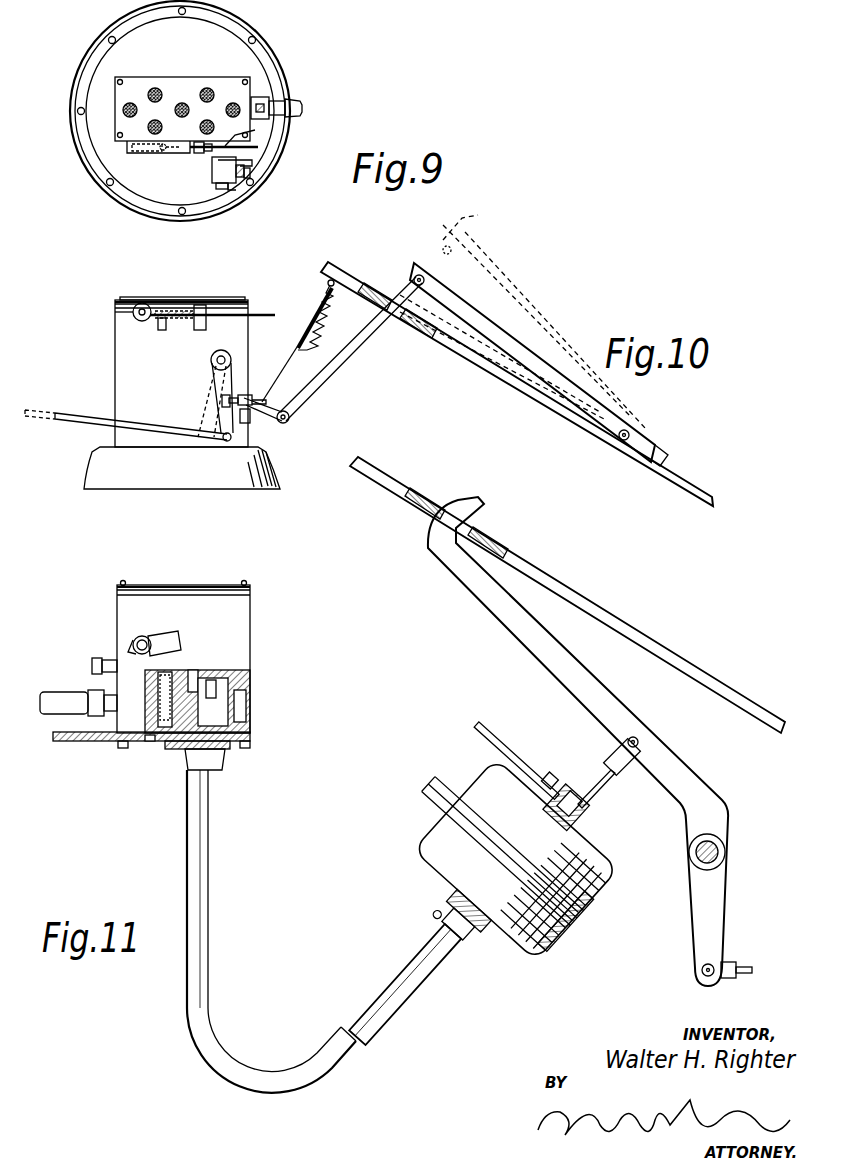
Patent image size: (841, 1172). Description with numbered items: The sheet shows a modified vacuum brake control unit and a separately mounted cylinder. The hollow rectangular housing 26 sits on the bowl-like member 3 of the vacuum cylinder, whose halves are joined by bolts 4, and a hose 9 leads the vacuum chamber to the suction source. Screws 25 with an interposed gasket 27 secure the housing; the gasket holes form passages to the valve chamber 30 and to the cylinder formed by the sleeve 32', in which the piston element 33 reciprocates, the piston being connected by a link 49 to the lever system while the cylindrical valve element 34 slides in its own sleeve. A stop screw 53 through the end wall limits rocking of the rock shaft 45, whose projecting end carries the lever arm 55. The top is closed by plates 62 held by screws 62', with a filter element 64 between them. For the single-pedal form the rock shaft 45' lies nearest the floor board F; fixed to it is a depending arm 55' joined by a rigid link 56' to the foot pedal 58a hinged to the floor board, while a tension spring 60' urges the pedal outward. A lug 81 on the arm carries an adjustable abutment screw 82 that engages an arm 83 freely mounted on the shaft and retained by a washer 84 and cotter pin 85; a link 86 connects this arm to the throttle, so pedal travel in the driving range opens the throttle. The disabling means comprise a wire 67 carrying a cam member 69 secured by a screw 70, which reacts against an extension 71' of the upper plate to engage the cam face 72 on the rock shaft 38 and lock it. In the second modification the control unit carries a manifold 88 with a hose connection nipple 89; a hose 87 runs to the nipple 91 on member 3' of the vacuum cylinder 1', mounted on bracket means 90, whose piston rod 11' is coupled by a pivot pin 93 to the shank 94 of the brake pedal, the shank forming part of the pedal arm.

In FIG. 9, the bowl-like member 3 is at (182, 111).
In FIG. 10, the bowl-like member 3 is at (166, 468).
In FIG. 9, the bolts 4 is at (110, 40).
In FIG. 9, the hose 9 is at (292, 101).
In FIG. 10, the hose 9 is at (244, 424).
In FIG. 11, the hose 9 is at (62, 702).
In FIG. 9, the housing 26 is at (180, 79).
In FIG. 10, the housing 26 is at (115, 374).
In FIG. 11, the housing 26 is at (118, 607).
In FIG. 9, the adjustable stop screw 53 is at (284, 100).
In FIG. 11, the adjustable stop screw 53 is at (90, 666).
In FIG. 9, the plates 62 is at (181, 93).
In FIG. 10, the plates 62 is at (108, 285).
In FIG. 11, the plates 62 is at (154, 577).
In FIG. 9, the screws 62' is at (121, 65).
In FIG. 10, the screws 62' is at (131, 285).
In FIG. 11, the screws 62' is at (121, 572).
In FIG. 9, the extension 71' is at (155, 165).
In FIG. 10, the extension 71' is at (174, 293).
In FIG. 9, the rock shaft 45' is at (216, 138).
In FIG. 10, the rock shaft 45' is at (199, 394).
In FIG. 9, the wire 67 is at (260, 145).
In FIG. 10, the wire 67 is at (266, 313).
In FIG. 9, the arm 55' is at (268, 156).
In FIG. 10, the arm 55' is at (274, 373).
In FIG. 9, the washer 84 is at (212, 176).
In FIG. 10, the washer 84 is at (238, 347).
In FIG. 9, the cotter pin 85 is at (220, 190).
In FIG. 10, the cotter pin 85 is at (220, 352).
In FIG. 9, the adjustable abutment screw 82 is at (251, 177).
In FIG. 10, the adjustable abutment screw 82 is at (283, 410).
In FIG. 9, the lug 81 is at (255, 186).
In FIG. 10, the lug 81 is at (250, 396).
In FIG. 10, the filter element 64 is at (118, 302).
In FIG. 11, the filter element 64 is at (181, 590).
In FIG. 10, the screw 70 is at (143, 309).
In FIG. 10, the cam member 69 is at (133, 314).
In FIG. 10, the cam face 72 is at (142, 322).
In FIG. 10, the rock shaft 38 is at (166, 325).
In FIG. 10, the arm 83 is at (221, 415).
In FIG. 10, the link 86 is at (90, 420).
In FIG. 10, the tension spring 60' is at (325, 315).
In FIG. 10, the rigid link 56' is at (352, 348).
In FIG. 10, the foot pedal 58a is at (420, 272).
In FIG. 10, the floor board F is at (347, 278).
In FIG. 11, the floor board F is at (395, 492).
In FIG. 11, the rock shaft 45 is at (140, 631).
In FIG. 11, the lever arm 55 is at (168, 631).
In FIG. 11, the cylindrical valve element 34 is at (180, 672).
In FIG. 11, the link 49 is at (212, 680).
In FIG. 11, the sleeve 32' is at (215, 692).
In FIG. 11, the piston element 33 is at (251, 713).
In FIG. 11, the gasket 27 is at (252, 733).
In FIG. 11, the screws 25 is at (250, 743).
In FIG. 11, the valve chamber 30 is at (148, 742).
In FIG. 11, the manifold 88 is at (167, 749).
In FIG. 11, the hose connection nipple 89 is at (222, 762).
In FIG. 11, the hose 87 is at (187, 851).
In FIG. 11, the vacuum cylinder 1' is at (494, 844).
In FIG. 11, the member 3' is at (516, 850).
In FIG. 11, the bracket means 90 is at (488, 730).
In FIG. 11, the nipple 91 is at (436, 904).
In FIG. 11, the piston rod 11' is at (604, 789).
In FIG. 11, the shank 94 is at (620, 720).
In FIG. 11, the pivot pin 93 is at (640, 743).
In FIG. 11, the wiper arm is at (590, 741).